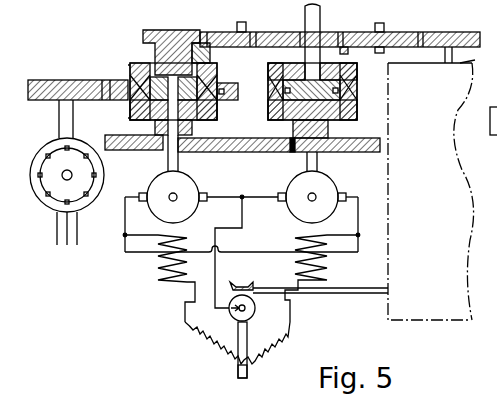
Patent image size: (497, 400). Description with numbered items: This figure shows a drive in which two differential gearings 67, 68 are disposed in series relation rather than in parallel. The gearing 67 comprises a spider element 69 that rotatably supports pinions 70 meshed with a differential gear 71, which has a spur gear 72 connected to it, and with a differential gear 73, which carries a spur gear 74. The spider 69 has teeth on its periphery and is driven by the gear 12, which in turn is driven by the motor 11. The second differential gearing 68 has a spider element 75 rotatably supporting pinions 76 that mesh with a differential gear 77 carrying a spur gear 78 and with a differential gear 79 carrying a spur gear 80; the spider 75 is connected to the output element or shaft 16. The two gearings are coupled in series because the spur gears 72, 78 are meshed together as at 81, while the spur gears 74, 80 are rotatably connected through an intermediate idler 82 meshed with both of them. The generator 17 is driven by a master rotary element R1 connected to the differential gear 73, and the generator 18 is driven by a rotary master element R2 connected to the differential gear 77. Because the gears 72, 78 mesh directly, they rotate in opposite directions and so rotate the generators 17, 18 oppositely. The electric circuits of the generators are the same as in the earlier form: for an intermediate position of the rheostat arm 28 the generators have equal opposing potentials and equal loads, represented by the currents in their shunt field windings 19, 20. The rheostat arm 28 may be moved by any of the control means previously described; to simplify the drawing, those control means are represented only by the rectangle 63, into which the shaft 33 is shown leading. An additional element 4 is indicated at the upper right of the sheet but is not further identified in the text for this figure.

The housing 4 is at (475, 60).
The motor 11 is at (37, 158).
The gear 12 is at (60, 80).
The output shaft 16 is at (305, 10).
The generator 17 is at (154, 187).
The generator 18 is at (333, 190).
The shunt field winding 19 is at (182, 276).
The shunt field winding 20 is at (327, 273).
The rheostat arm 28 is at (248, 338).
The shaft 33 is at (368, 293).
The rectangle 63 is at (438, 322).
The differential gearing 67 is at (114, 66).
The differential gearing 68 is at (365, 98).
The spider element 69 is at (143, 63).
The pinions 70 is at (130, 105).
The differential gear 71 is at (198, 120).
The spur gear 72 is at (207, 152).
The differential gear 73 is at (199, 63).
The spur gear 74 is at (172, 31).
The spider element 75 is at (346, 62).
The pinions 76 is at (268, 82).
The differential gear 77 is at (275, 119).
The spur gear 78 is at (288, 152).
The differential gear 79 is at (285, 63).
The spur gear 80 is at (322, 32).
The mesh 81 is at (243, 152).
The intermediate idler 82 is at (272, 27).
The master rotary element R1 is at (170, 163).
The rotary master element R2 is at (317, 163).